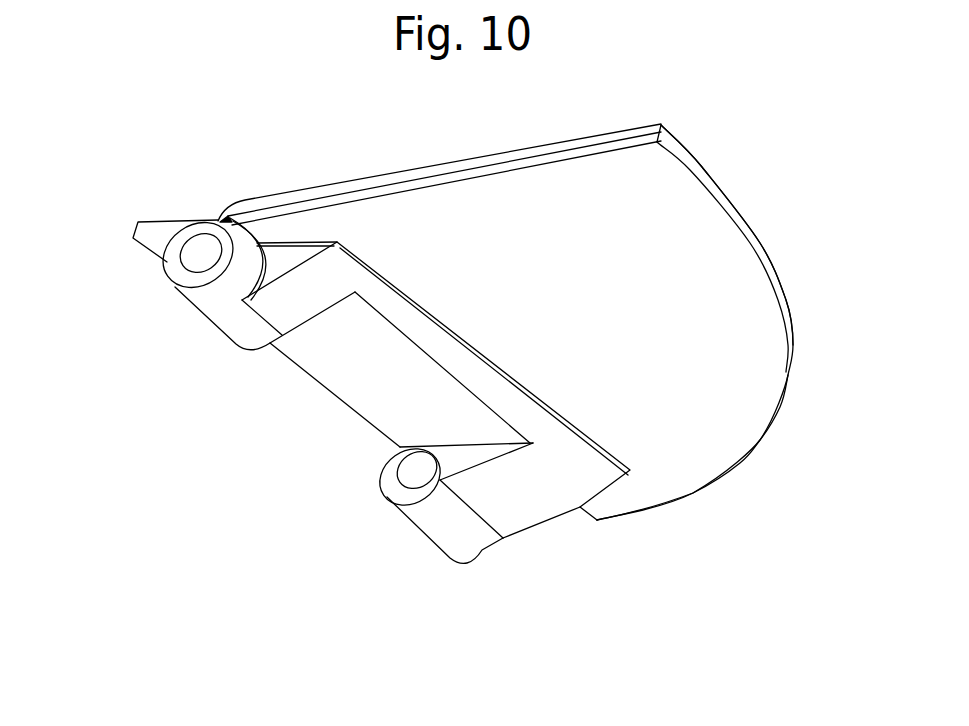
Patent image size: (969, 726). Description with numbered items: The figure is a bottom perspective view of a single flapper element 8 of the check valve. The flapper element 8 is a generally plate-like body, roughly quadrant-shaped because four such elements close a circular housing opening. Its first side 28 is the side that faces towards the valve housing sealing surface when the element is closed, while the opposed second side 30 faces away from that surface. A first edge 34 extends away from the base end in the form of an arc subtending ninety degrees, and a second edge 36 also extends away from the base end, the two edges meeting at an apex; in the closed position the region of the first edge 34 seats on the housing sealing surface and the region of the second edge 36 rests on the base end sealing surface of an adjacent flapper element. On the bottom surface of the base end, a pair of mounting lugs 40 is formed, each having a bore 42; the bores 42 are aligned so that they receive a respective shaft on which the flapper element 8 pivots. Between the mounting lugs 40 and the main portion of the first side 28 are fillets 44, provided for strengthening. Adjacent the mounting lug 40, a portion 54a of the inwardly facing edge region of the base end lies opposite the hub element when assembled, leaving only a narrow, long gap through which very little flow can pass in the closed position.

The flapper element 8 is at (683, 518).
The first side 28 is at (702, 420).
The second side 30 is at (722, 243).
The first edge 34 is at (700, 167).
The second edge 36 is at (608, 143).
The mounting lug 40 is at (225, 315).
The bore 42 is at (188, 261).
The fillet 44 is at (307, 280).
The portion of inwardly facing edge region 54a is at (197, 227).